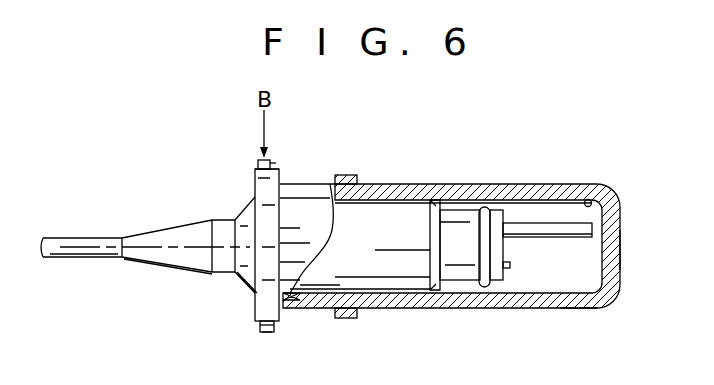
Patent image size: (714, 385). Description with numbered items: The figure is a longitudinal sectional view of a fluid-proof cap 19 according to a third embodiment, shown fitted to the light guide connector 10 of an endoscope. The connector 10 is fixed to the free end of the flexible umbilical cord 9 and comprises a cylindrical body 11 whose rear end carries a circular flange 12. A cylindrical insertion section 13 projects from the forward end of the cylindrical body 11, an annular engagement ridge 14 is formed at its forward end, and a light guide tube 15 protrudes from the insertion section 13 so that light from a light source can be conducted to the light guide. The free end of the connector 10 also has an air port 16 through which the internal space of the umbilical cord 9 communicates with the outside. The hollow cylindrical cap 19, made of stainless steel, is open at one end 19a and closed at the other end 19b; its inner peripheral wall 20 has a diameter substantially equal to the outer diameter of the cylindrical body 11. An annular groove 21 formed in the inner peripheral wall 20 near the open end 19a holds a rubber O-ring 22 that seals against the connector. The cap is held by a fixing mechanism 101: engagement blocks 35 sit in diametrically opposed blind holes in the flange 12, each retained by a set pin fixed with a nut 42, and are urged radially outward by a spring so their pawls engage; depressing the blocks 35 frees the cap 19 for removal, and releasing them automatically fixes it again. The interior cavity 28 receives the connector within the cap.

The umbilical cord 9 is at (82, 247).
The connector 10 is at (224, 285).
The circular flange 12 is at (260, 186).
The mechanism 101 is at (248, 162).
The engagement block 35 is at (273, 162).
The nut 42 is at (276, 164).
The one end of the cap 19a is at (262, 326).
The cylindrical body 11 is at (400, 288).
The O-ring 22 is at (292, 298).
The annular groove 21 is at (300, 300).
The cylindrical insertion section 13 is at (460, 270).
The annular engagement ridge 14 is at (486, 207).
The light guide tube 15 is at (536, 230).
The air port 16 is at (508, 268).
The fluid-proof cap 19 is at (570, 300).
The other end of the cap 19b is at (620, 252).
The inner peripheral wall 20 is at (588, 199).
The cavity 28 is at (584, 274).